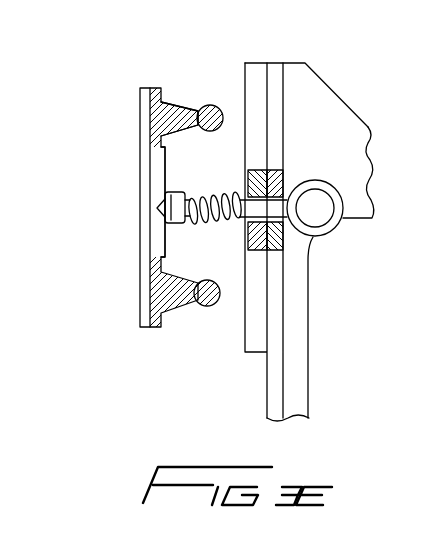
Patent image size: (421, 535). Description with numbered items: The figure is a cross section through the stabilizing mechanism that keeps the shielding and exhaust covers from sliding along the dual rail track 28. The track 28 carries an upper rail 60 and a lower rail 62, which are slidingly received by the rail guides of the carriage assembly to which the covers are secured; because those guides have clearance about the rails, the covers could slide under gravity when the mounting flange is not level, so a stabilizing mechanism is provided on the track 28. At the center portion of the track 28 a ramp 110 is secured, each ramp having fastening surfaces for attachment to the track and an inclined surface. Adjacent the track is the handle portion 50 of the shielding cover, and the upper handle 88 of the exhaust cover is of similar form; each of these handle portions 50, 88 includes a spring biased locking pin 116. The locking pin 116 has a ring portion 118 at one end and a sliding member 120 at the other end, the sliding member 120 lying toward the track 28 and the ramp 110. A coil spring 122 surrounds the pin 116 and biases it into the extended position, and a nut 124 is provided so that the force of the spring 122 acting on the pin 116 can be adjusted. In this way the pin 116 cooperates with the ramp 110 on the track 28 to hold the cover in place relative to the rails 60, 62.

The dual rail track 28 is at (141, 110).
The upper rail 60 is at (210, 104).
The lower rail 62 is at (209, 306).
The ramp 110 is at (192, 129).
The coil spring 122 is at (214, 191).
The nut 124 is at (172, 191).
The sliding member 120 is at (157, 210).
The spring biased locking pin 116 is at (250, 222).
The ring portion 118 is at (328, 231).
The handle portion 50 is at (321, 224).
The upper handle 88 is at (297, 63).